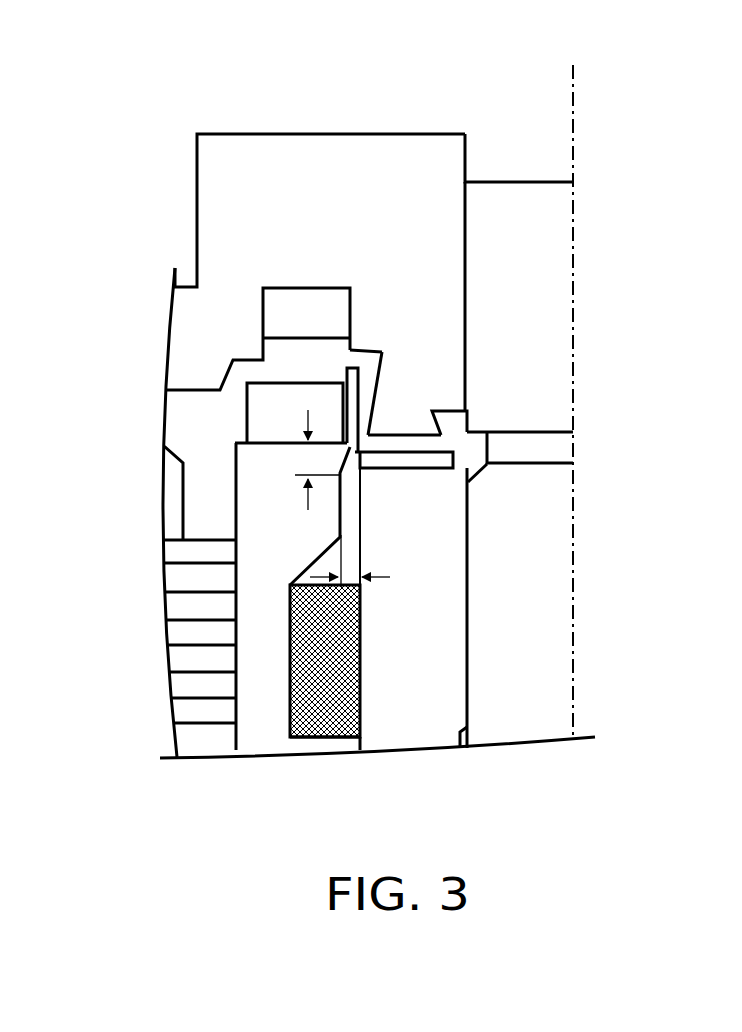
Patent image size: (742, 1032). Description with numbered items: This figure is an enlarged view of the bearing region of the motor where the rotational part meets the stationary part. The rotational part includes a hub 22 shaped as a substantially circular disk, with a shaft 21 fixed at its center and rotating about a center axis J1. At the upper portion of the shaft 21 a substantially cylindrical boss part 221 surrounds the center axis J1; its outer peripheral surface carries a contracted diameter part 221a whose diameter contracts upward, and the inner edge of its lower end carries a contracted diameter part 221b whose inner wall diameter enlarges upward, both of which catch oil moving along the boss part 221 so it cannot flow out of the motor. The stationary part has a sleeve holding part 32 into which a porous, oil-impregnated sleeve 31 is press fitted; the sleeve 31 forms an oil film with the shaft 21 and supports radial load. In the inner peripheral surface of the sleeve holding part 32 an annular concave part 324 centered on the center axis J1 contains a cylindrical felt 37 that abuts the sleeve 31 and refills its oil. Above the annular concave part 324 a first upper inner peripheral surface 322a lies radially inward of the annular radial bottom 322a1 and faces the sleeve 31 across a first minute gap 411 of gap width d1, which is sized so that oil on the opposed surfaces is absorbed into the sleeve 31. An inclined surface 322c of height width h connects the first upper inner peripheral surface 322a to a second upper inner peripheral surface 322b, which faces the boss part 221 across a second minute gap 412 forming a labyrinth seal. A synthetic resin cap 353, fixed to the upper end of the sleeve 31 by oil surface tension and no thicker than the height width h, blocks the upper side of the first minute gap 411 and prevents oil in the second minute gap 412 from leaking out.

The hub 22 is at (217, 205).
The shaft 21 is at (568, 215).
The center axis J1 is at (572, 130).
The boss part 221 is at (415, 392).
The contracted diameter part 221a is at (374, 352).
The second minute gap 412 is at (366, 417).
The contracted diameter part 221b is at (450, 417).
The cap 353 is at (453, 455).
The second upper inner peripheral surface 322b is at (363, 368).
The first upper inner peripheral surface 322a is at (340, 532).
The inclined surface 322c is at (360, 483).
The first minute gap 411 is at (350, 500).
The sleeve 31 is at (427, 713).
The sleeve holding part 32 is at (250, 720).
The annular concave part 324 is at (320, 643).
The felt 37 is at (307, 677).
The annular radial bottom 322a1 is at (308, 737).
The height width h is at (308, 462).
The gap width d1 is at (369, 593).